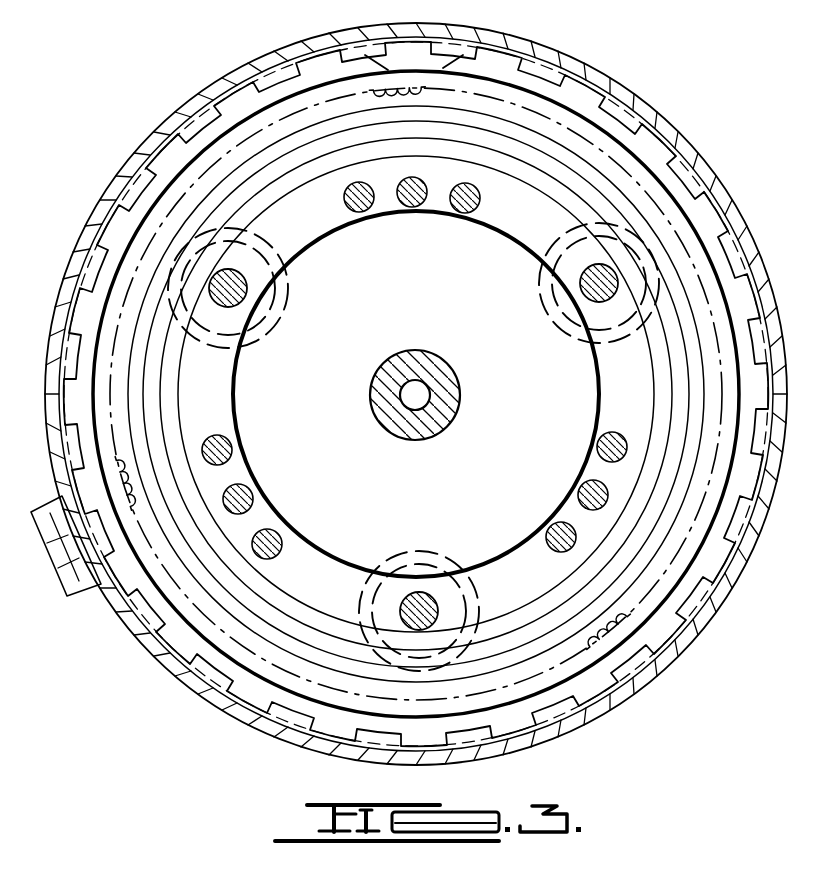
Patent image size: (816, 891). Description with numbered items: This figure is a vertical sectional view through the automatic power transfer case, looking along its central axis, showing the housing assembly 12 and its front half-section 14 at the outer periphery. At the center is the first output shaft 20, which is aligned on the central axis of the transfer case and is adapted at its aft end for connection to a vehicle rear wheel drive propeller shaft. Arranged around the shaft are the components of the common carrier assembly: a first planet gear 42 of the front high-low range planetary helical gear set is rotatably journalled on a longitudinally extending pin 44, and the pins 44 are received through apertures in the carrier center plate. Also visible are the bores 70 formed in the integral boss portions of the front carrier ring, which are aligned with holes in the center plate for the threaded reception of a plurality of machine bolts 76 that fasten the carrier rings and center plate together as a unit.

The housing assembly 12 is at (627, 79).
The front half-section 14 is at (569, 58).
The first output shaft 20 is at (435, 365).
The first planet gear 42 is at (290, 299).
The pin 44 is at (242, 286).
The bore 70 is at (367, 210).
The machine bolt 76 is at (278, 536).